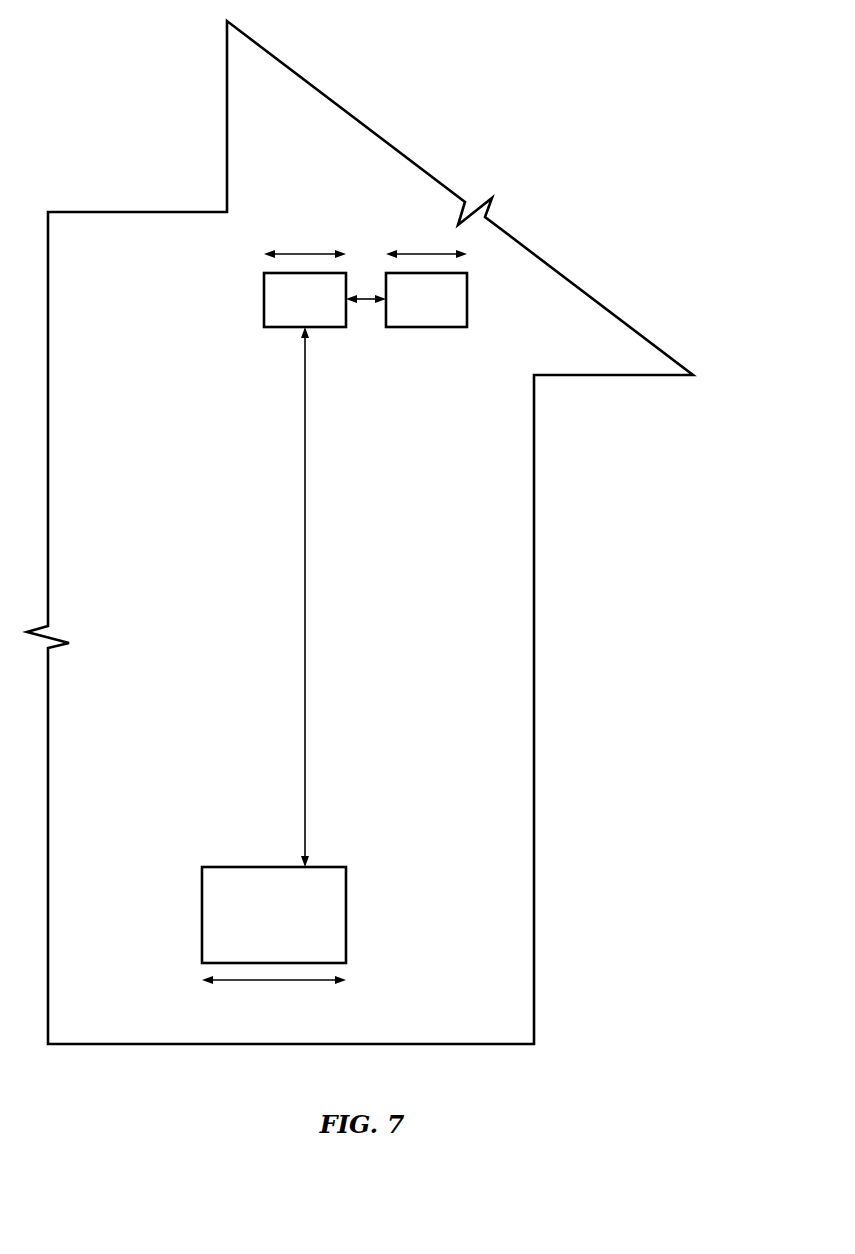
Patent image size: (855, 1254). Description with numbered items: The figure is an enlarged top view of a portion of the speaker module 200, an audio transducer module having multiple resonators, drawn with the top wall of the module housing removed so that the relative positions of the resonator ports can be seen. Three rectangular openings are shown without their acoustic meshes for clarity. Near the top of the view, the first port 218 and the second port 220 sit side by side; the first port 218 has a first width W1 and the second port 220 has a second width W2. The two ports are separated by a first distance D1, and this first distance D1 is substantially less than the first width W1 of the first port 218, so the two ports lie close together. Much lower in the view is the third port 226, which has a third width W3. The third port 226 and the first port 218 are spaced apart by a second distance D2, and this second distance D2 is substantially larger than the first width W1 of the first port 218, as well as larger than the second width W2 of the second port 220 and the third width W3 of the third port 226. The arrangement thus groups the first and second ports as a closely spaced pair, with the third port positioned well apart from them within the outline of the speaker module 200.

The speaker module 200 is at (544, 140).
The first port 218 is at (269, 330).
The second port 220 is at (432, 330).
The third port 226 is at (201, 914).
The first width W1 is at (305, 250).
The second width W2 is at (427, 250).
The third width W3 is at (272, 984).
The first distance D1 is at (367, 303).
The second distance D2 is at (305, 597).